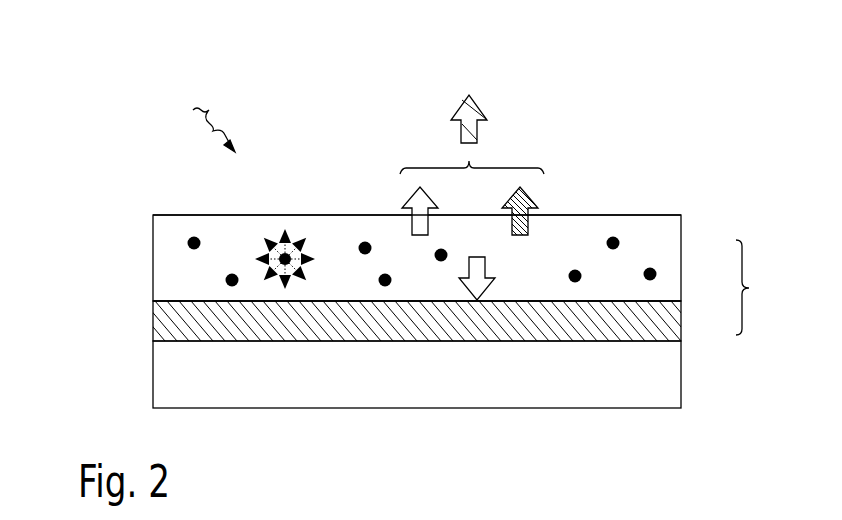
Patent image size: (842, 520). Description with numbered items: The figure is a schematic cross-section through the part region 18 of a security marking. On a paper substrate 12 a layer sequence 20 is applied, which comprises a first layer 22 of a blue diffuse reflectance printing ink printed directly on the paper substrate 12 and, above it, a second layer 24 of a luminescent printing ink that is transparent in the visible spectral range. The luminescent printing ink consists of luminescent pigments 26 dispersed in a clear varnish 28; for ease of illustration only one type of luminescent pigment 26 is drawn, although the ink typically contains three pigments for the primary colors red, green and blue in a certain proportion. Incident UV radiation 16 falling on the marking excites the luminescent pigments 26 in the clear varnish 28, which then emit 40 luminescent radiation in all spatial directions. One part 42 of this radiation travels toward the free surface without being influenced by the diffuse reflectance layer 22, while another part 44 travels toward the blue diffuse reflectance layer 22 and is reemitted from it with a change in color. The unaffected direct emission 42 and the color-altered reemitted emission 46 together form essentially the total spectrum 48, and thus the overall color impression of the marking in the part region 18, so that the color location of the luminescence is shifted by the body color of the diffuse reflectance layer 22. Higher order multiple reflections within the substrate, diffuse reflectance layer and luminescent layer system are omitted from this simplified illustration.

The paper substrate 12 is at (668, 378).
The incident UV radiation 16 is at (208, 110).
The part region 18 is at (675, 203).
The layer sequence 20 is at (759, 287).
The first layer of blue diffuse reflectance printing ink 22 is at (684, 323).
The second layer of luminescent printing ink 24 is at (668, 254).
The luminescent pigments 26 is at (187, 242).
The clear varnish 28 is at (172, 277).
The emission in all spatial directions 40 is at (291, 248).
The directly emitted part of the radiation 42 is at (406, 201).
The part of radiation emitted toward the diffuse reflectance layer 44 is at (461, 289).
The color-altered reemitted emission 46 is at (532, 204).
The total spectrum 48 is at (481, 114).